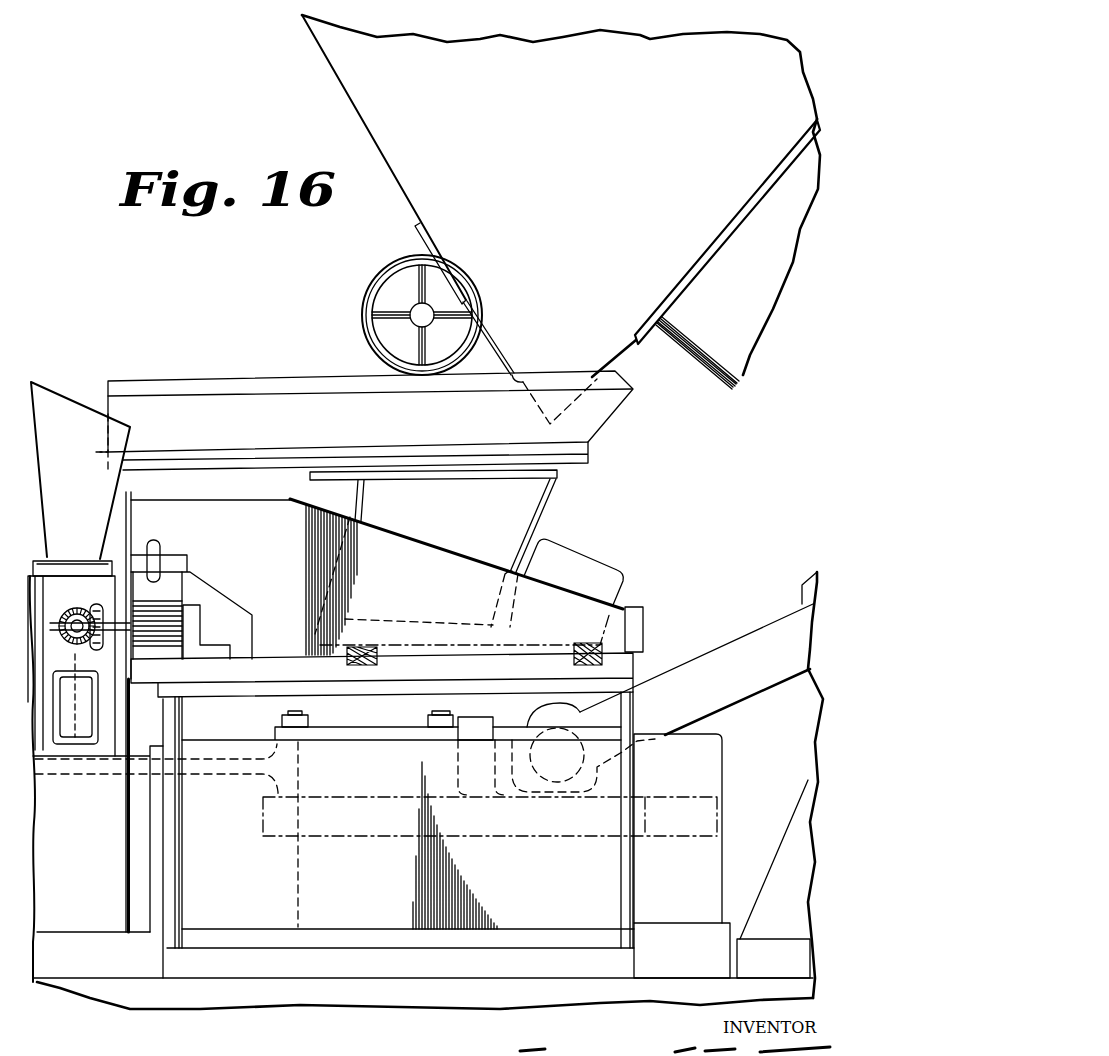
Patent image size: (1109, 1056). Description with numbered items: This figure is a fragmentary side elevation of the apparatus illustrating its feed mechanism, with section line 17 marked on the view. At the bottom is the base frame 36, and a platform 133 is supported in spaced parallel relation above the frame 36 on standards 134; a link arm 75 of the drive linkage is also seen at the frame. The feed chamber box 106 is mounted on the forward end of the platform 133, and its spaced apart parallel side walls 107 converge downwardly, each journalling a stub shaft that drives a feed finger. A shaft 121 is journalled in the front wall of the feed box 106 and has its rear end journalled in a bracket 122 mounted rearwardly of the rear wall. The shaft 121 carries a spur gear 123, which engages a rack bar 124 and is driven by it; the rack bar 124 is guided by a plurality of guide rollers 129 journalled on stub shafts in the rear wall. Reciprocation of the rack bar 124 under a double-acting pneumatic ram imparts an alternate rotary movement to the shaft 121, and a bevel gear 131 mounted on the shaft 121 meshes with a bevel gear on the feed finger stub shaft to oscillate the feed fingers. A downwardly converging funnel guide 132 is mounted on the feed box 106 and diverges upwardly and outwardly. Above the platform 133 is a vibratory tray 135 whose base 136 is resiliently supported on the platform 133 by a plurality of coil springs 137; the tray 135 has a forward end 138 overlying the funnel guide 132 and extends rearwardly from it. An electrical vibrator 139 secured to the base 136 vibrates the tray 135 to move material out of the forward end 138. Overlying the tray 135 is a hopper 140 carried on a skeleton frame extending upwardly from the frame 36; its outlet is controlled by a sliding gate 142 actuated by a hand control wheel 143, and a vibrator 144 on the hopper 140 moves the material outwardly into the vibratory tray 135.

The section line 17 is at (103, 505).
The base frame 36 is at (108, 998).
The link arm 75 is at (693, 657).
The feed chamber box 106 is at (70, 754).
The side walls 107 is at (63, 662).
The shaft 121 is at (59, 606).
The bracket 122 is at (194, 636).
The spur gear 123 is at (188, 600).
The rack bar 124 is at (181, 578).
The guide rollers 129 is at (162, 548).
The bevel gear 131 is at (95, 649).
The funnel guide 132 is at (53, 404).
The platform 133 is at (282, 645).
The standards 134 is at (177, 900).
The vibratory tray 135 is at (158, 395).
The base 136 is at (363, 507).
The coil springs 137 is at (371, 649).
The forward end 138 is at (97, 470).
The electrical vibrator 139 is at (572, 555).
The hopper 140 is at (368, 106).
The sliding gate 142 is at (490, 349).
The hand control wheel 143 is at (481, 310).
The vibrator 144 is at (713, 360).